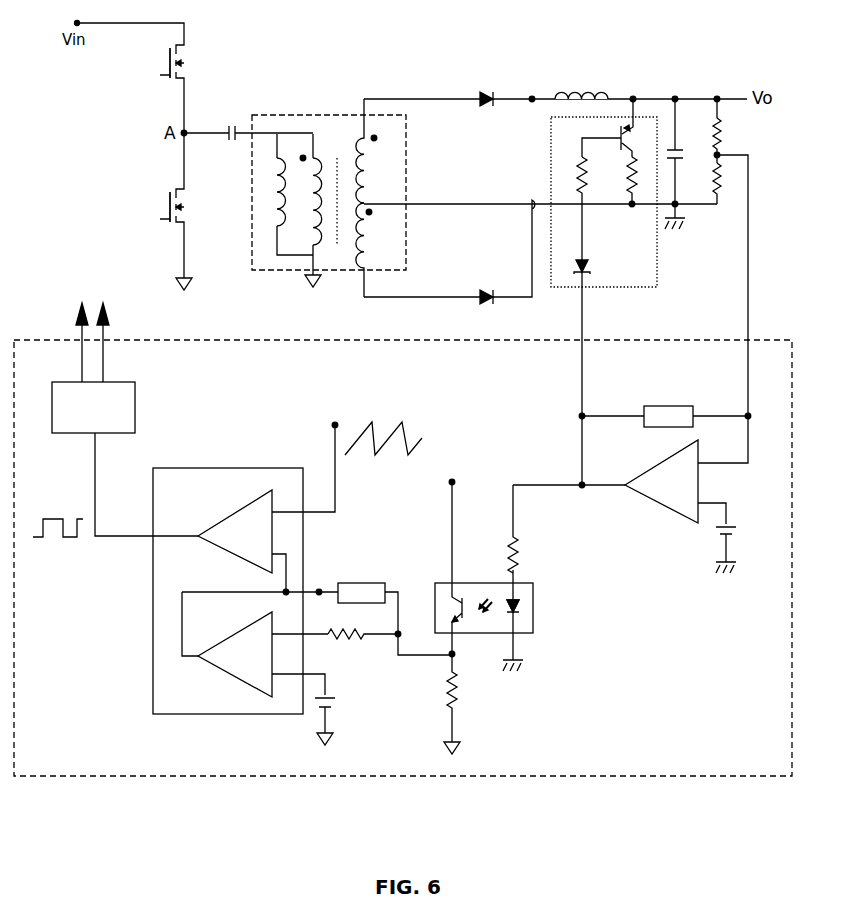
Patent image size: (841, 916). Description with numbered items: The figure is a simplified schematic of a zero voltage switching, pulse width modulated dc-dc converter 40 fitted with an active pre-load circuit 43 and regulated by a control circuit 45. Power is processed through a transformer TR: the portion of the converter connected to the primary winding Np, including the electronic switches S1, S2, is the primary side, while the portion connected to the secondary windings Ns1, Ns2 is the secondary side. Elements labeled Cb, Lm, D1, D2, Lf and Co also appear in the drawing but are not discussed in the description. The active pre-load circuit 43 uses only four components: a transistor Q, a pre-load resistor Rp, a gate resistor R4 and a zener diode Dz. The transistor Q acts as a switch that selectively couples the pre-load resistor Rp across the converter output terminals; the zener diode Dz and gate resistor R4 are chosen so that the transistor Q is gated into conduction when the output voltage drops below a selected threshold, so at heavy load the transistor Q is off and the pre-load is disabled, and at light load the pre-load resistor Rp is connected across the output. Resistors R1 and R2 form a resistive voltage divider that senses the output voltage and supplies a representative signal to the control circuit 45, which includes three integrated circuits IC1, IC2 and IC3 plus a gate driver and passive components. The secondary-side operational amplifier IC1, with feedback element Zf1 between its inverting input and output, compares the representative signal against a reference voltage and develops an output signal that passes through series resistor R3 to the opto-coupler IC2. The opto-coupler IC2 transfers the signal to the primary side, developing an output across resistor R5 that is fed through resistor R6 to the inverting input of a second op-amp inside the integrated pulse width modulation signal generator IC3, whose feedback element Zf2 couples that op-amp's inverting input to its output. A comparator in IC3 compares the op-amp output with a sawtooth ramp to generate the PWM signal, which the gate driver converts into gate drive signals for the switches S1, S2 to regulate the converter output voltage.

The converter 40 is at (407, 88).
The active pre-load circuit 43 is at (657, 266).
The control circuit 45 is at (584, 777).
The electronic switch S1 is at (150, 65).
The electronic switch S2 is at (143, 213).
The blocking capacitor Cb is at (248, 146).
The transformer TR is at (314, 115).
The magnetizing inductance Lm is at (271, 192).
The transformer primary winding Np is at (309, 200).
The transformer secondary winding Ns1 is at (378, 151).
The transformer secondary winding Ns2 is at (376, 250).
The rectifier diode D1 is at (492, 84).
The rectifier diode D2 is at (492, 284).
The output filter inductor Lf is at (581, 81).
The transistor Q is at (616, 126).
The gate resistor R4 is at (570, 208).
The pre-load resistor Rp is at (619, 182).
The zener diode Dz is at (597, 367).
The output capacitor Co is at (685, 162).
The voltage divider resistor R1 is at (731, 129).
The voltage divider resistor R2 is at (723, 307).
The integrated pulse width modulation signal generator IC3 is at (244, 569).
The feedback element Zf2 is at (395, 603).
The resistor R6 is at (364, 644).
The opto-coupler IC2 is at (484, 564).
The series resistor R3 is at (566, 529).
The resistor R5 is at (440, 702).
The feedback element Zf1 is at (665, 399).
The secondary-side operational amplifier IC1 is at (680, 506).